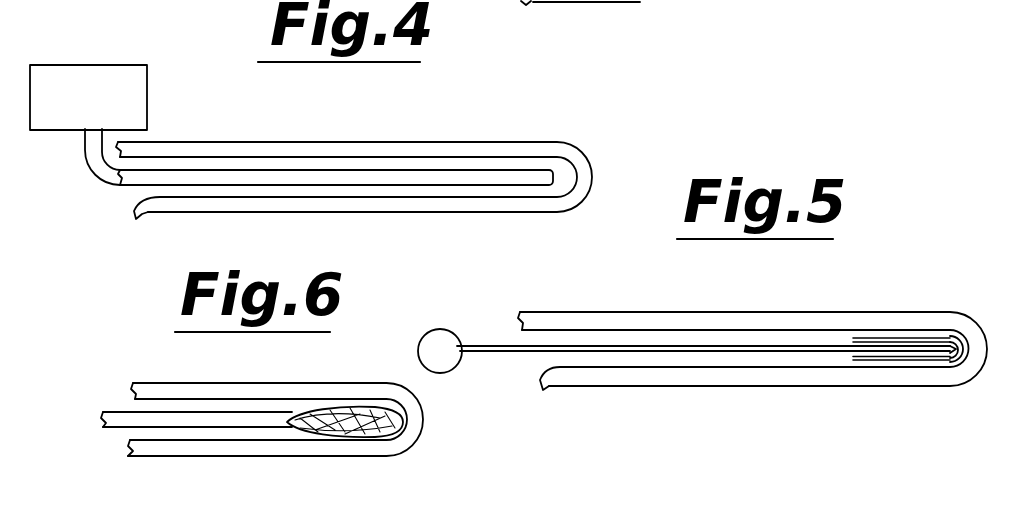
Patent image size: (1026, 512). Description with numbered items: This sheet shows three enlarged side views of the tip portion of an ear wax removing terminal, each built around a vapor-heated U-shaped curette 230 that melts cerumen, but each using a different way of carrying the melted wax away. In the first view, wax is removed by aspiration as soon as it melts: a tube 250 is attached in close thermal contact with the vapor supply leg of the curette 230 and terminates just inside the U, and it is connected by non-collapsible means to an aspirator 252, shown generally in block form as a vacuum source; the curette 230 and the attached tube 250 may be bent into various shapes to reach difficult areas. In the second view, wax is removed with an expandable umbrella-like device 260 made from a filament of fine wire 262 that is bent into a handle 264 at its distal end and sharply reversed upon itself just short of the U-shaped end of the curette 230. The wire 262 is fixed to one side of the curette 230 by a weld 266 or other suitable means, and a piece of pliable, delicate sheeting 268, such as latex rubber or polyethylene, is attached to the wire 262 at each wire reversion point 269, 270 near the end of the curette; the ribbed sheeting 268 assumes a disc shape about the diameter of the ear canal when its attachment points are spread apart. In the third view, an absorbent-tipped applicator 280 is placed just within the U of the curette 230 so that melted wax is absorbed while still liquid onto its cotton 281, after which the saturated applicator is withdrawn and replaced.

In FIG. 4, the U-shaped curette 230 is at (557, 142).
In FIG. 5, the U-shaped curette 230 is at (663, 313).
In FIG. 6, the U-shaped curette 230 is at (305, 387).
In FIG. 4, the aspirator tube 250 is at (113, 188).
In FIG. 4, the aspirator 252 is at (114, 65).
In FIG. 5, the expandable umbrella-like device 260 is at (955, 384).
In FIG. 5, the fine wire 262 is at (512, 343).
In FIG. 5, the handle 264 is at (420, 342).
In FIG. 5, the weld 266 is at (918, 337).
In FIG. 5, the pliable sheeting 268 is at (960, 342).
In FIG. 5, the wire reversion point 269 is at (942, 340).
In FIG. 5, the wire reversion point 270 is at (947, 353).
In FIG. 6, the absorbent-tipped applicator 280 is at (128, 417).
In FIG. 6, the cotton 281 is at (395, 430).